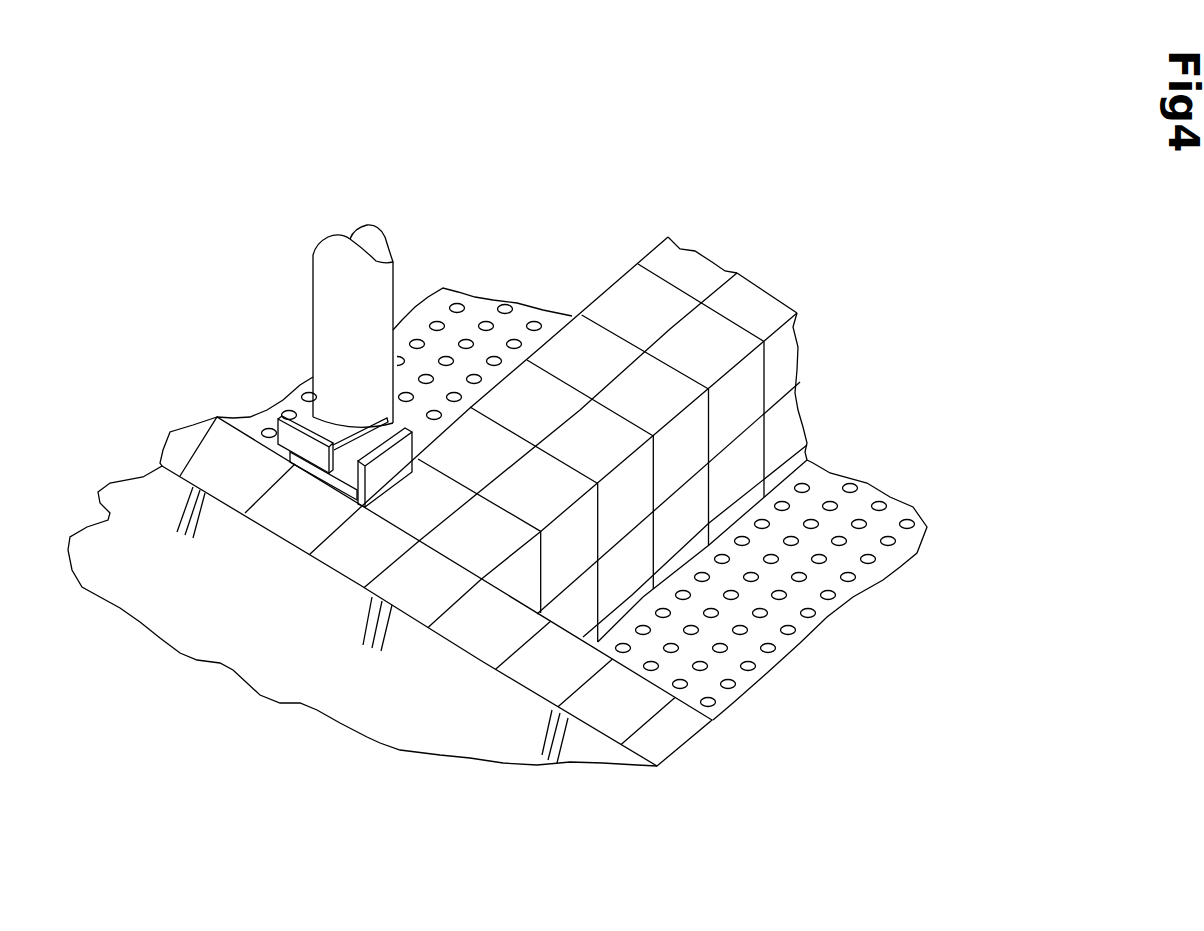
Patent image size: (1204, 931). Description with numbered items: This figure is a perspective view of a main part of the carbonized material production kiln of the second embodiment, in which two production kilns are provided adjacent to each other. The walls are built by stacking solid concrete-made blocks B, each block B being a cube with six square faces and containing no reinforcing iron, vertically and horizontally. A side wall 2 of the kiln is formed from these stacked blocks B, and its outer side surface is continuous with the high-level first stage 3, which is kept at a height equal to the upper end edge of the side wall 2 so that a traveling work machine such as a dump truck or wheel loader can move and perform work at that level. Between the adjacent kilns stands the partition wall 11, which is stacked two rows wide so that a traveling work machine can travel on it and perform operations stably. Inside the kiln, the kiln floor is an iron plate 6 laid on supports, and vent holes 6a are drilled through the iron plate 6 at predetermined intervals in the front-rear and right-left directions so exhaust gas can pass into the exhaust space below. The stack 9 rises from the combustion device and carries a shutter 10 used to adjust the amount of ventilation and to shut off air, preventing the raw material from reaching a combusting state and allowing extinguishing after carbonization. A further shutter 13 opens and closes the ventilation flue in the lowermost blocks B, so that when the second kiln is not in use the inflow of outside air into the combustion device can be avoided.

The side wall 2 is at (677, 730).
The first stage 3 is at (302, 685).
The iron plate 6 is at (887, 518).
The vent hole 6a is at (850, 580).
The stack 9 is at (373, 310).
The shutter 10 is at (317, 425).
The partition wall 11 is at (755, 308).
The shutter 13 is at (392, 468).
The block B is at (697, 283).